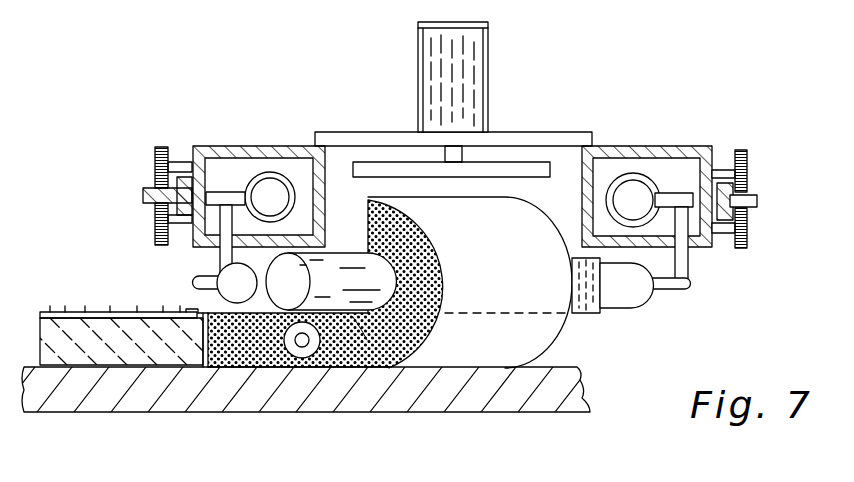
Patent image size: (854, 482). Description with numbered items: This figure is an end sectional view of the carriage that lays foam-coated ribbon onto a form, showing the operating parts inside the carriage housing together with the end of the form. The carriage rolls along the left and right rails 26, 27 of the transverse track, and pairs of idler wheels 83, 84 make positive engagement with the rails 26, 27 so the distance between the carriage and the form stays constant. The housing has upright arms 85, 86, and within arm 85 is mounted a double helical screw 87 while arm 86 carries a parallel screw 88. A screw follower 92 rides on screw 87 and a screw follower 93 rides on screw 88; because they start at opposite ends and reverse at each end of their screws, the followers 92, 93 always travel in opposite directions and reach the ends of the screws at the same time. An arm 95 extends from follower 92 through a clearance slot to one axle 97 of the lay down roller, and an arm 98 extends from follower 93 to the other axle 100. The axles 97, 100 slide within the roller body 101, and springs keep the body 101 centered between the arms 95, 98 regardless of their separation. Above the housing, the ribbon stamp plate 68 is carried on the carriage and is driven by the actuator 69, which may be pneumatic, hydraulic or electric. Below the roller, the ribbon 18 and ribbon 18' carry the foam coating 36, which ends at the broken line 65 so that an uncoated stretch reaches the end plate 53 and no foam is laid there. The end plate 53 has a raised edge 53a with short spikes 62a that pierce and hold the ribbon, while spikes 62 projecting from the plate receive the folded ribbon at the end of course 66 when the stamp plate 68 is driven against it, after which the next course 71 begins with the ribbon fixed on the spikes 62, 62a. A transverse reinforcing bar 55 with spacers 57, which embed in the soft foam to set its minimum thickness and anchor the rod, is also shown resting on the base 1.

The base 1 is at (568, 402).
The ribbon 18 is at (115, 287).
The ribbon 18' is at (369, 334).
The left rail 26 is at (143, 195).
The right rail 27 is at (760, 200).
The foam coating 36 is at (537, 332).
The end plate 53 is at (38, 330).
The raised edge 53a is at (187, 312).
The transverse reinforcing bar 55 is at (318, 340).
The spacer 57 is at (312, 358).
The spikes 62 is at (50, 312).
The short spikes 62a is at (193, 310).
The broken line 65 is at (205, 367).
The course 66 is at (218, 368).
The ribbon stamp plate 68 is at (530, 150).
The actuator 69 is at (488, 32).
The course 71 is at (277, 370).
The idler wheels 83 is at (155, 148).
The idler wheels 84 is at (745, 162).
The upright arm 85 is at (325, 183).
The upright arm 86 is at (582, 192).
The double helical screw 87 is at (267, 180).
The double helical screw 88 is at (640, 190).
The screw follower 92 is at (272, 185).
The screw follower 93 is at (620, 175).
The arm 95 is at (220, 262).
The axle 97 is at (268, 298).
The arm 98 is at (690, 268).
The axle 100 is at (642, 295).
The roller body 101 is at (338, 278).